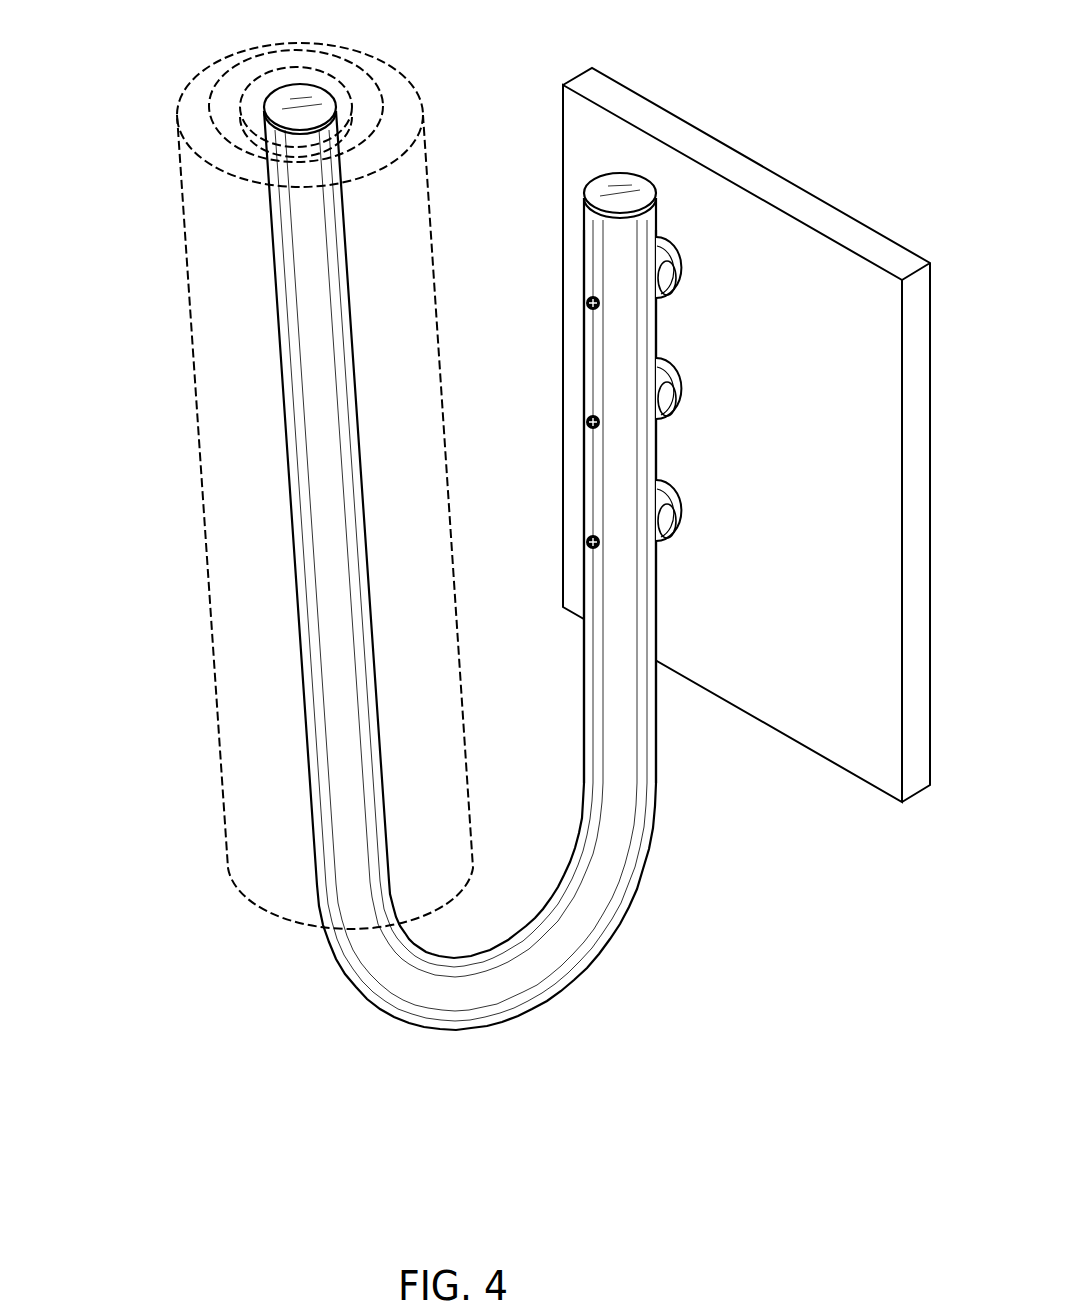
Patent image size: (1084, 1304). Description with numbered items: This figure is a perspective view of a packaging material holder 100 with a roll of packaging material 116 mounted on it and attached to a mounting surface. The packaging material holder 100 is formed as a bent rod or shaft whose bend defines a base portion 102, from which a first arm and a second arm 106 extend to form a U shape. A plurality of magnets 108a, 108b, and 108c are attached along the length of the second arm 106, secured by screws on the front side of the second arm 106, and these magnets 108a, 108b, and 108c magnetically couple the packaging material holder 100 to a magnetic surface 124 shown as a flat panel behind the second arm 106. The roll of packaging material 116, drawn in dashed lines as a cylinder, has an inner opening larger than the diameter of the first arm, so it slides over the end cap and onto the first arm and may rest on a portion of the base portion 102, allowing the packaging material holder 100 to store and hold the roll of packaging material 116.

The packaging material holder 100 is at (150, 38).
The base portion 102 is at (605, 942).
The second arm 106 is at (657, 728).
The magnet 108a is at (683, 258).
The magnet 108b is at (683, 388).
The magnet 108c is at (683, 513).
The roll of packaging material 116 is at (175, 296).
The magnetic surface 124 is at (758, 173).